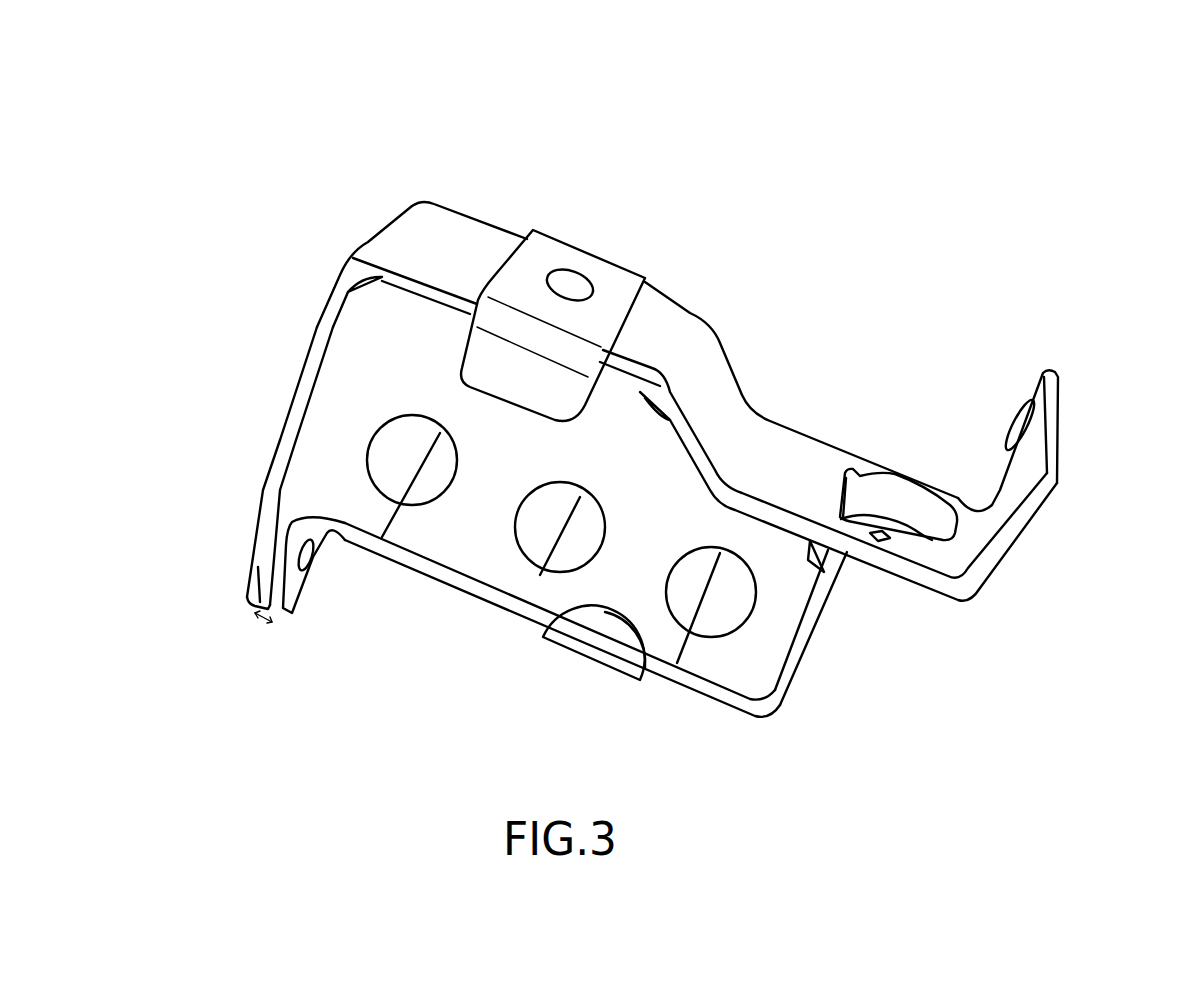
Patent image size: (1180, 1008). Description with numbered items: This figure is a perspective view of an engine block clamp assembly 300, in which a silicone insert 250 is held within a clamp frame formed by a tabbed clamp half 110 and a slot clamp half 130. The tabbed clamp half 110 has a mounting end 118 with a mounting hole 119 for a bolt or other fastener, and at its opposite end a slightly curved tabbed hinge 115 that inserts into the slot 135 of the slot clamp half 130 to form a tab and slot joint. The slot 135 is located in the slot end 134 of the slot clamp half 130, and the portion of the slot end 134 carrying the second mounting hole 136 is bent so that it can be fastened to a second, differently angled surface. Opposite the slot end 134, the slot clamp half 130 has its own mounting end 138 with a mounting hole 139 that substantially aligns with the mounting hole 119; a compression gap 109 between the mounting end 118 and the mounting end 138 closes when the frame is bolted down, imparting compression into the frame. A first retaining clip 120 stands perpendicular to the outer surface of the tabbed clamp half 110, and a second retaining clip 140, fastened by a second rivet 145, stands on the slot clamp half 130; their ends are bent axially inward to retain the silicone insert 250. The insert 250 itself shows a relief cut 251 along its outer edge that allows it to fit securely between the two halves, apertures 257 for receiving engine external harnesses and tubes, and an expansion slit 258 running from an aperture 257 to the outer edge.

The engine block clamp assembly 300 is at (322, 131).
The slot clamp half 130 is at (452, 226).
The second retaining clip 140 is at (628, 278).
The second rivet 145 is at (568, 282).
The silicone insert 250 is at (326, 390).
The relief cut 251 is at (763, 686).
The second mounting hole 136 is at (1018, 426).
The slot 135 is at (852, 477).
The tabbed hinge 115 is at (906, 493).
The slot end 134 is at (1054, 453).
The mounting hole 139 is at (253, 533).
The mounting end 138 is at (253, 560).
The compression gap 109 is at (254, 632).
The mounting hole 119 is at (302, 557).
The mounting end 118 is at (286, 616).
The tabbed clamp half 110 is at (465, 586).
The expansion slit 258 is at (542, 580).
The aperture 257 is at (720, 613).
The first retaining clip 120 is at (606, 631).